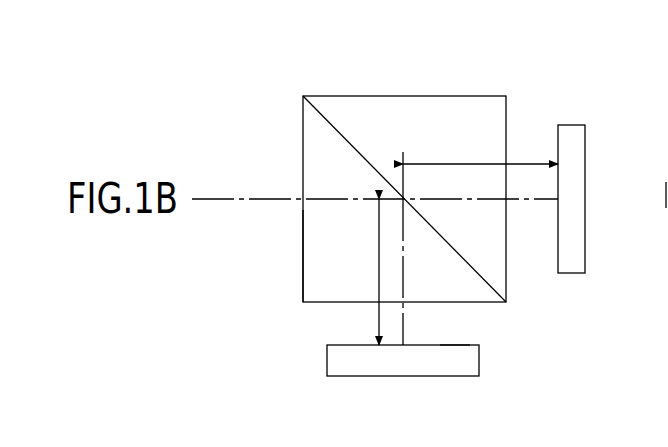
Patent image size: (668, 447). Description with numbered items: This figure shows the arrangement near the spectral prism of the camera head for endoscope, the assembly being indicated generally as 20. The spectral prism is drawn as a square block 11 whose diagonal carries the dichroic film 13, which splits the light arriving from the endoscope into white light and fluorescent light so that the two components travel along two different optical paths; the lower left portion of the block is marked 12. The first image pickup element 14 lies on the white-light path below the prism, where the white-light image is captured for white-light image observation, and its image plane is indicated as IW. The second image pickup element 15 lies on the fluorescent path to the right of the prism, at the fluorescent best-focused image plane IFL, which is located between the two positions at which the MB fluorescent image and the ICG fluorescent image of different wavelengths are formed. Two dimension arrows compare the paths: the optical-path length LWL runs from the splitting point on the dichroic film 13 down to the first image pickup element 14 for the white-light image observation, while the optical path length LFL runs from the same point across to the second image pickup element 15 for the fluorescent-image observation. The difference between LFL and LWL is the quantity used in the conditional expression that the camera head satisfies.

The optical module 20 is at (514, 55).
The beam splitter cube 11 is at (450, 96).
The dichroic film 13 is at (333, 125).
The beam splitter 12 is at (302, 262).
The second image pickup element 15 is at (586, 137).
The first image pickup element 14 is at (327, 358).
The fluorescent best-focused image plane IFL is at (557, 145).
The optical path length for fluorescent-image observation LFL is at (480, 151).
The optical path length for white-light image observation LWL is at (352, 272).
The light emission window IW is at (455, 345).